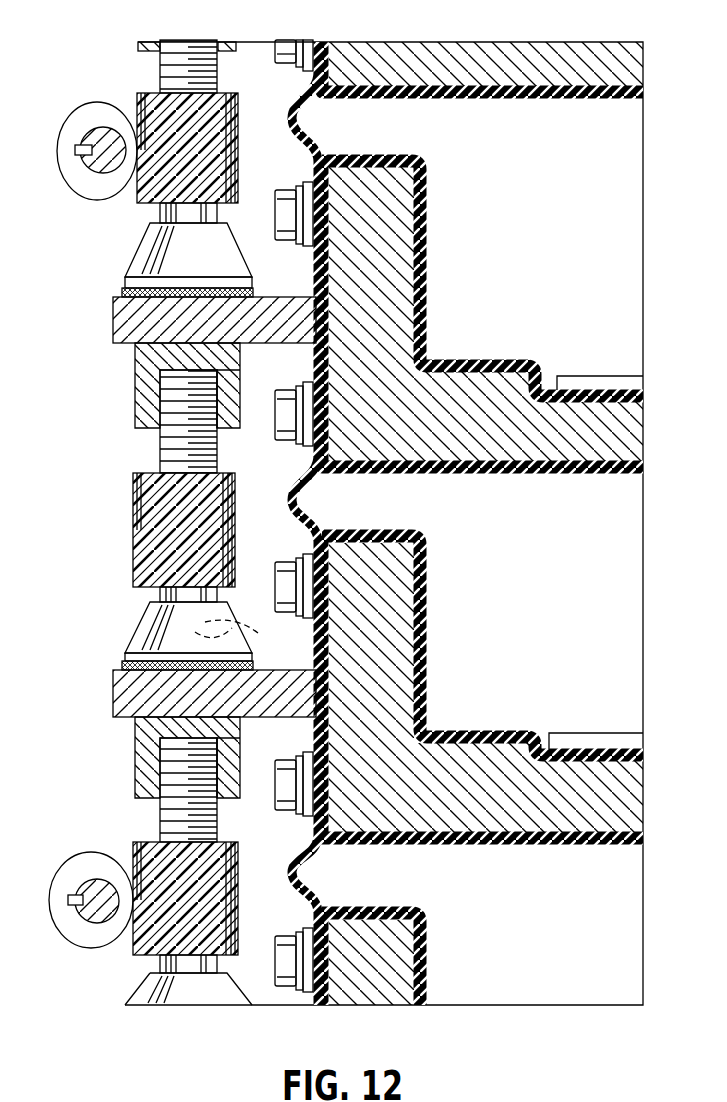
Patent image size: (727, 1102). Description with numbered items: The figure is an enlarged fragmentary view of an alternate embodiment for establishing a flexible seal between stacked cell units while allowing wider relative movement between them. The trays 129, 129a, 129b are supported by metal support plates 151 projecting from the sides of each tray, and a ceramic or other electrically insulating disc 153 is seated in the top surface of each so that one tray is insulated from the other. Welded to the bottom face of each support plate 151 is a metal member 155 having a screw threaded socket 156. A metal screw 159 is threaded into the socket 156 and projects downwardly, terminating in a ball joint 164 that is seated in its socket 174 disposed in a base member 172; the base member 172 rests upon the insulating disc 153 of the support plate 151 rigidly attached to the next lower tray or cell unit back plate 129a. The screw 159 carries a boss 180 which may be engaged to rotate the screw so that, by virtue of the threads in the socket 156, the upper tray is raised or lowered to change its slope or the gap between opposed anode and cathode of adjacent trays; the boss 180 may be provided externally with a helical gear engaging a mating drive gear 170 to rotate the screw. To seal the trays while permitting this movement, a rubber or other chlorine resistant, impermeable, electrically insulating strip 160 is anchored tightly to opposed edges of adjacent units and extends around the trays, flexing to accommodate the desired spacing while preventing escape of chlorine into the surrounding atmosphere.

The tray 129 is at (467, 62).
The tray 129a is at (462, 433).
The wall section 129b is at (505, 815).
The support plate 151 is at (115, 318).
The insulating disc 153 is at (122, 292).
The metal member 155 is at (135, 388).
The screw threaded socket 156 is at (218, 393).
The metal screw 159 is at (160, 68).
The insulating strip 160 is at (296, 112).
The ball joint 164 is at (240, 628).
The drive gear 170 is at (60, 132).
The base member 172 is at (150, 247).
The socket 174 is at (228, 626).
The boss 180 is at (239, 181).